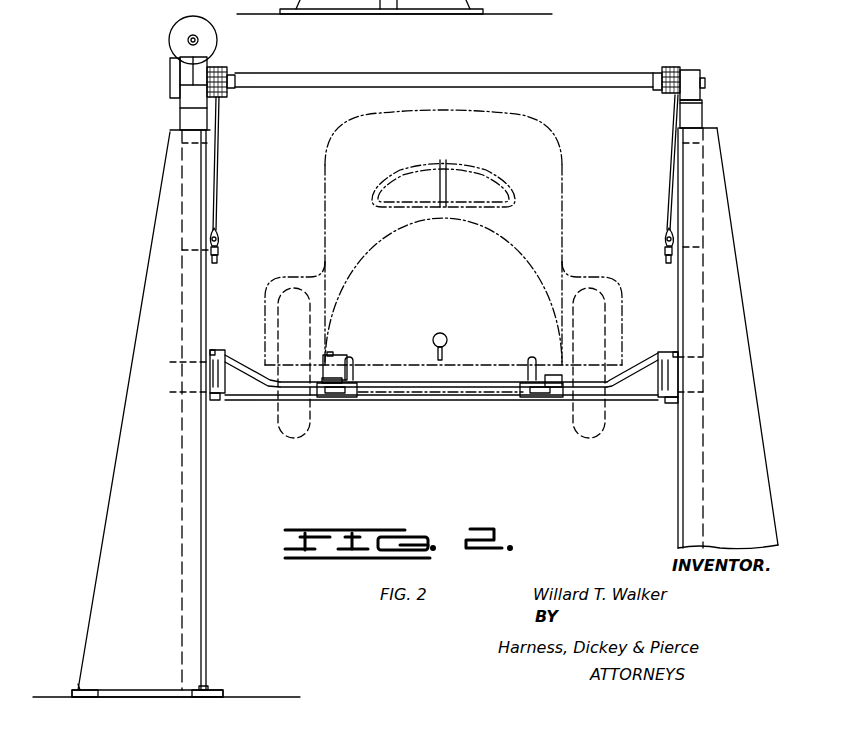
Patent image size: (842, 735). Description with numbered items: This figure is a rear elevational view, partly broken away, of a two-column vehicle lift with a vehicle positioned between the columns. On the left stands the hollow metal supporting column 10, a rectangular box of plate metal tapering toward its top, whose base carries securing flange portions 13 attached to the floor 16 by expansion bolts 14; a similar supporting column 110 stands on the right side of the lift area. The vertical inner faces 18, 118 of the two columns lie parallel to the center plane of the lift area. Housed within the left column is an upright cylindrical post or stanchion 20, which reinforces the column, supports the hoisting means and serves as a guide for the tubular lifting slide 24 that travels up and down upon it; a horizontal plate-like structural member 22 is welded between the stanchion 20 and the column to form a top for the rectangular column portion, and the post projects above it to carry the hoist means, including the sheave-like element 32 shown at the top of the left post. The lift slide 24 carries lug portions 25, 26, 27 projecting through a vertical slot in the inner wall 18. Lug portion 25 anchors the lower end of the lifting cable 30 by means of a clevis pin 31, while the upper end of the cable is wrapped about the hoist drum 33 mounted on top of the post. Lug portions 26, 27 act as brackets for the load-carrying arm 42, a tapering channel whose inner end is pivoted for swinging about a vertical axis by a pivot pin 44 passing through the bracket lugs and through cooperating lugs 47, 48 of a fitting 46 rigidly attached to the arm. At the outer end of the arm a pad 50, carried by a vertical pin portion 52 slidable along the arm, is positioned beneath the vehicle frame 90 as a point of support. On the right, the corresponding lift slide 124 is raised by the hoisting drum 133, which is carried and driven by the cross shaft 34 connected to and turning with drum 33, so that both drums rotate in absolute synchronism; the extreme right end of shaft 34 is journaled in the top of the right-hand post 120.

The supporting column 10 is at (128, 374).
The securing flange portions 13 is at (80, 690).
The expansion bolts 14 is at (86, 690).
The floor 16 is at (55, 697).
The inner face 18 is at (207, 473).
The post or stanchion 20 is at (193, 508).
The plate-like structural member 22 is at (178, 128).
The lifting slide 24 is at (207, 297).
The lug portion 25 is at (218, 254).
The lug portion 26 is at (222, 350).
The lug portion 27 is at (222, 400).
The lifting cable 30 is at (218, 170).
The clevis pin 31 is at (222, 240).
The pulley 32 is at (190, 20).
The hoist drum 33 is at (220, 67).
The cross shaft 34 is at (450, 75).
The load-carrying arm 42 is at (268, 393).
The pivot pin 44 is at (228, 368).
The fitting 46 is at (228, 381).
The lug 47 is at (212, 357).
The lug 48 is at (210, 390).
The pad 50 is at (337, 380).
The vertical pin portion 52 is at (330, 393).
The frame 90 is at (330, 355).
The supporting column 110 is at (733, 292).
The inner face 118 is at (678, 445).
The post 120 is at (692, 485).
The lift slide 124 is at (677, 302).
The hoisting drum 133 is at (672, 67).